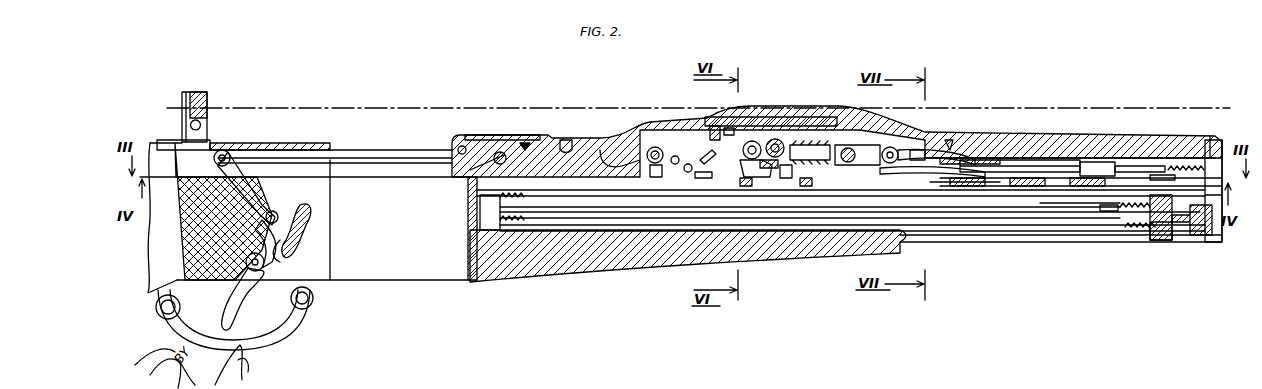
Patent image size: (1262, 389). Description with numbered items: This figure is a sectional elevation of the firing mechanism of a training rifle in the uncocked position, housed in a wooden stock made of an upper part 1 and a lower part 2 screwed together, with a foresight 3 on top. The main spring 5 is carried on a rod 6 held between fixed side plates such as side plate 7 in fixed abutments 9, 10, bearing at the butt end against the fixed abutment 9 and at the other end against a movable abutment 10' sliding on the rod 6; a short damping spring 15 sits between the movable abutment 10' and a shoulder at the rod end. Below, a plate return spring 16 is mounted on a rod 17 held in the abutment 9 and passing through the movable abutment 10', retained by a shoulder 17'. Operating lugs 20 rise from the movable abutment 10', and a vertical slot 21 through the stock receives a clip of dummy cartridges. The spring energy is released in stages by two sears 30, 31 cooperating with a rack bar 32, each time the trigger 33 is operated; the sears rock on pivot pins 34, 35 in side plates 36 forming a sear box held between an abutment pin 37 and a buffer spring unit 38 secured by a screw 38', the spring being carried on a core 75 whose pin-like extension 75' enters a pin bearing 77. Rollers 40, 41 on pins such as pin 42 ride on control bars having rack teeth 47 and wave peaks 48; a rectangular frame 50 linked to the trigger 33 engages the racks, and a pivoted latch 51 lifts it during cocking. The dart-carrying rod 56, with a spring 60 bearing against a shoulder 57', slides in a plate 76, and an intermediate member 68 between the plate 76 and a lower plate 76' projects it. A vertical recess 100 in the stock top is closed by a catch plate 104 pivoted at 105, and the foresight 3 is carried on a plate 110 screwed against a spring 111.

The upper stock part 1 is at (993, 140).
The lower stock part 2 is at (560, 262).
The foresight 3 is at (780, 143).
The main spring 5 is at (1107, 207).
The rod 6 is at (1090, 203).
The side plate 7 is at (543, 193).
The fixed abutment 9 is at (467, 265).
The fixed abutment 10 is at (1214, 183).
The movable abutment 10' is at (1167, 131).
The damping spring 15 is at (1160, 228).
The plate return spring 16 is at (505, 230).
The rod 17 is at (849, 240).
The shoulder 17' is at (1174, 246).
The operating lug 20 is at (1160, 167).
The vertical slot 21 is at (373, 263).
The sear 30 is at (677, 157).
The sear 31 is at (743, 183).
The rack bar 32 is at (803, 177).
The trigger 33 is at (227, 303).
The pivot pin 34 is at (700, 177).
The pivot pin 35 is at (783, 177).
The side plate 36 is at (753, 143).
The abutment pin 37 is at (688, 165).
The buffer spring unit 38 is at (904, 127).
The screw 38' is at (926, 133).
The roller 40 is at (657, 150).
The roller 41 is at (702, 158).
The pin 42 is at (655, 170).
The rack teeth 47 is at (607, 163).
The peak 48 is at (920, 130).
The rectangular frame 50 is at (337, 160).
The pivoted latch 51 is at (465, 160).
The rod 56 is at (1023, 167).
The shoulder 57' is at (1097, 134).
The spring 60 is at (1200, 167).
The intermediate member 68 is at (950, 147).
The core 75 is at (835, 201).
The pin-like extension 75' is at (757, 99).
The plate 76 is at (1081, 138).
The lower plate 76' is at (965, 236).
The pin bearing 77 is at (793, 133).
The vertical recess 100 is at (565, 142).
The catch plate 104 is at (490, 135).
The pivot 105 is at (525, 147).
The plate 110 is at (737, 120).
The spring 111 is at (727, 125).